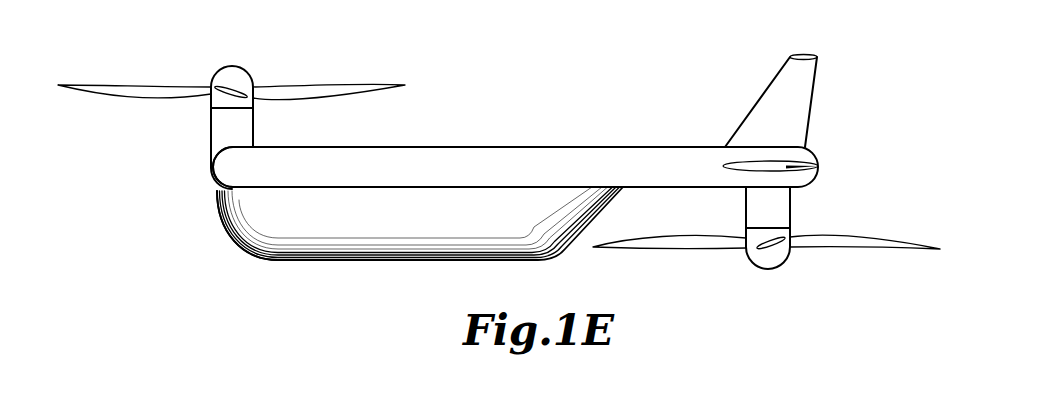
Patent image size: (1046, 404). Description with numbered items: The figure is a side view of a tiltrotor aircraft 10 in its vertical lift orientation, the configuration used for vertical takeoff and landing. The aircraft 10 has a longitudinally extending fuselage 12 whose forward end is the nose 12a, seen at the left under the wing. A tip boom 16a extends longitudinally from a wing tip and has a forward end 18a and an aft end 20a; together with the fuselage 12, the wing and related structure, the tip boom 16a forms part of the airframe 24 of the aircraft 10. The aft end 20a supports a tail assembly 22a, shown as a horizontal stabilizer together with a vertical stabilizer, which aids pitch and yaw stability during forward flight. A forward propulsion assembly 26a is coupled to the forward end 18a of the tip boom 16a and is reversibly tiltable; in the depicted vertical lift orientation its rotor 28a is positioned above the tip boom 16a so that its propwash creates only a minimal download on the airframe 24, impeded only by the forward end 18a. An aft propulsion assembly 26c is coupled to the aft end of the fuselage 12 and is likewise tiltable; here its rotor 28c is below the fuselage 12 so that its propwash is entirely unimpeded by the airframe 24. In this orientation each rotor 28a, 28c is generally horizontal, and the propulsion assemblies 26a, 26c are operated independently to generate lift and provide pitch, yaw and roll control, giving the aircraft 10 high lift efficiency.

The tiltrotor aircraft 10 is at (517, 103).
The fuselage 12 is at (305, 262).
The forward end or nose 12a is at (215, 215).
The tip boom 16a is at (435, 147).
The forward end of tip boom 18a is at (228, 168).
The aft end of tip boom 20a is at (807, 157).
The tail assembly 22a is at (768, 90).
The airframe 24 is at (586, 145).
The forward propulsion assembly 26a is at (210, 125).
The aft propulsion assembly 26c is at (785, 208).
The rotor 28a is at (292, 92).
The rotor 28c is at (900, 243).